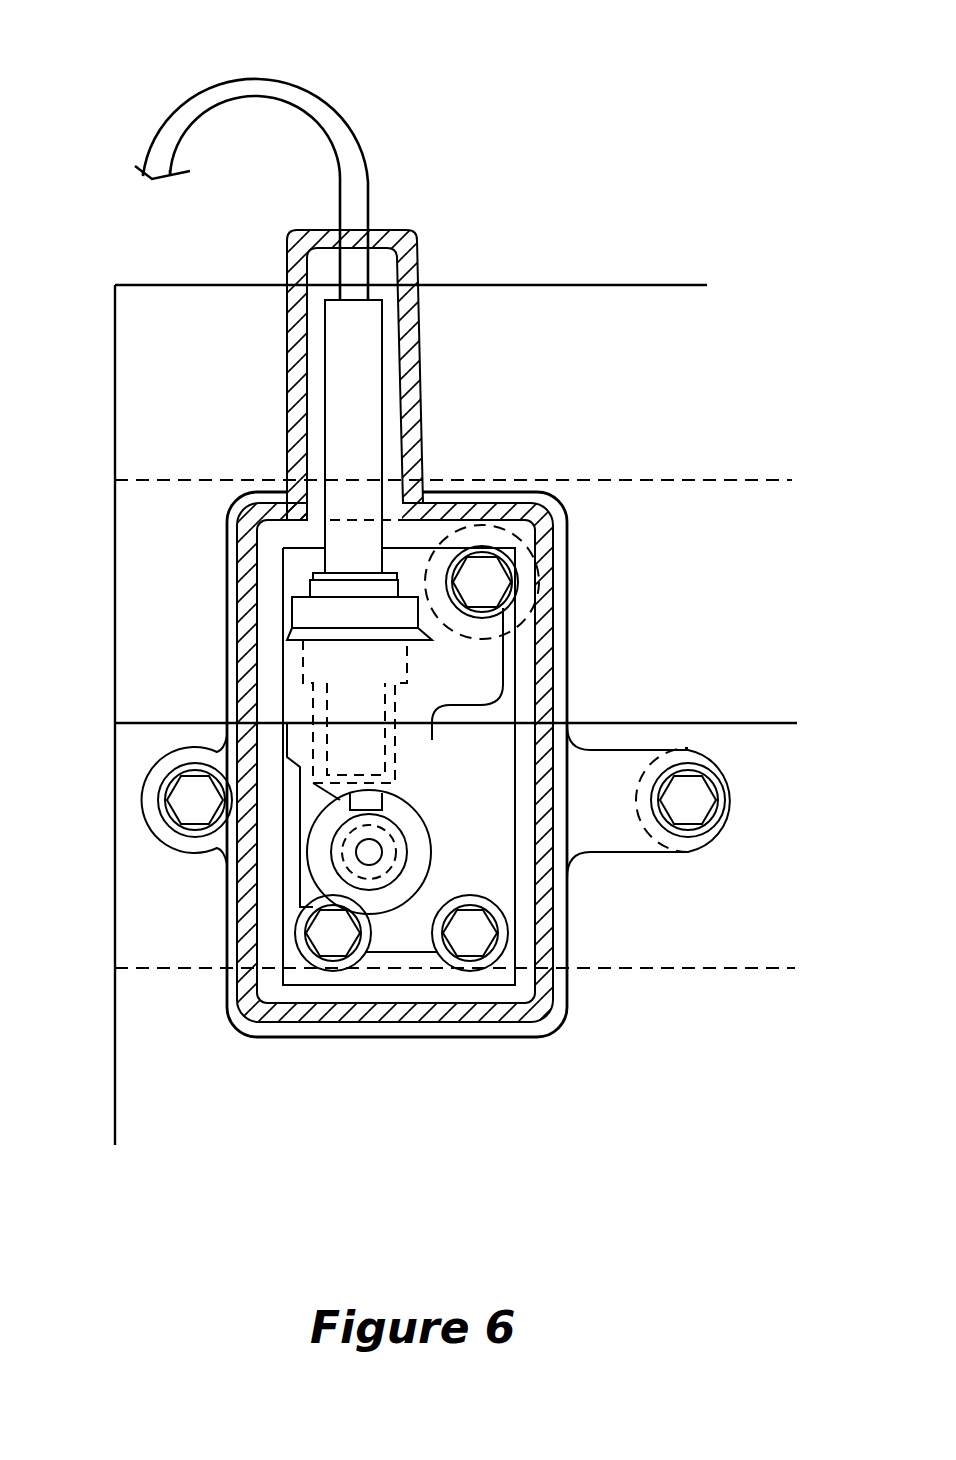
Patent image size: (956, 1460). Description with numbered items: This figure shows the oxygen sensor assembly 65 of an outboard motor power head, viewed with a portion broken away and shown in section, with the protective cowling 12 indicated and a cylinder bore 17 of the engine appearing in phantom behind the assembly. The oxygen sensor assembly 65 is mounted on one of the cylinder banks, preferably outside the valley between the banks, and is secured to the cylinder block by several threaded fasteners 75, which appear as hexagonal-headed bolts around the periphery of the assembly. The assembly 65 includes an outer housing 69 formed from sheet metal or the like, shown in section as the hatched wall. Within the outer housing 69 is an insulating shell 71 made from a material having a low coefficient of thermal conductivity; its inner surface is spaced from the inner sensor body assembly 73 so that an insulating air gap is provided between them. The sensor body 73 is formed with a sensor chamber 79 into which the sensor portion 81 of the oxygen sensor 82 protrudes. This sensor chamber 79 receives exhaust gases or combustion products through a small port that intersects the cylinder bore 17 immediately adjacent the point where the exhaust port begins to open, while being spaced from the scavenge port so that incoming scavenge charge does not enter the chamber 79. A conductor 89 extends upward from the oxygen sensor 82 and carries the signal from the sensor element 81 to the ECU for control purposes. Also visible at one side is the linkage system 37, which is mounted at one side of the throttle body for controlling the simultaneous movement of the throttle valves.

The protective cowling 12 is at (623, 285).
The cylinder bore 17 is at (705, 480).
The linkage system 37 is at (398, 857).
The oxygen sensor assembly 65 is at (433, 142).
The outer housing 69 is at (560, 577).
The insulating shell 71 is at (510, 652).
The sensor body assembly 73 is at (455, 737).
The threaded fasteners 75 is at (488, 577).
The sensor chamber 79 is at (405, 748).
The sensor portion 81 is at (348, 708).
The oxygen sensor 82 is at (405, 563).
The conductor 89 is at (312, 80).